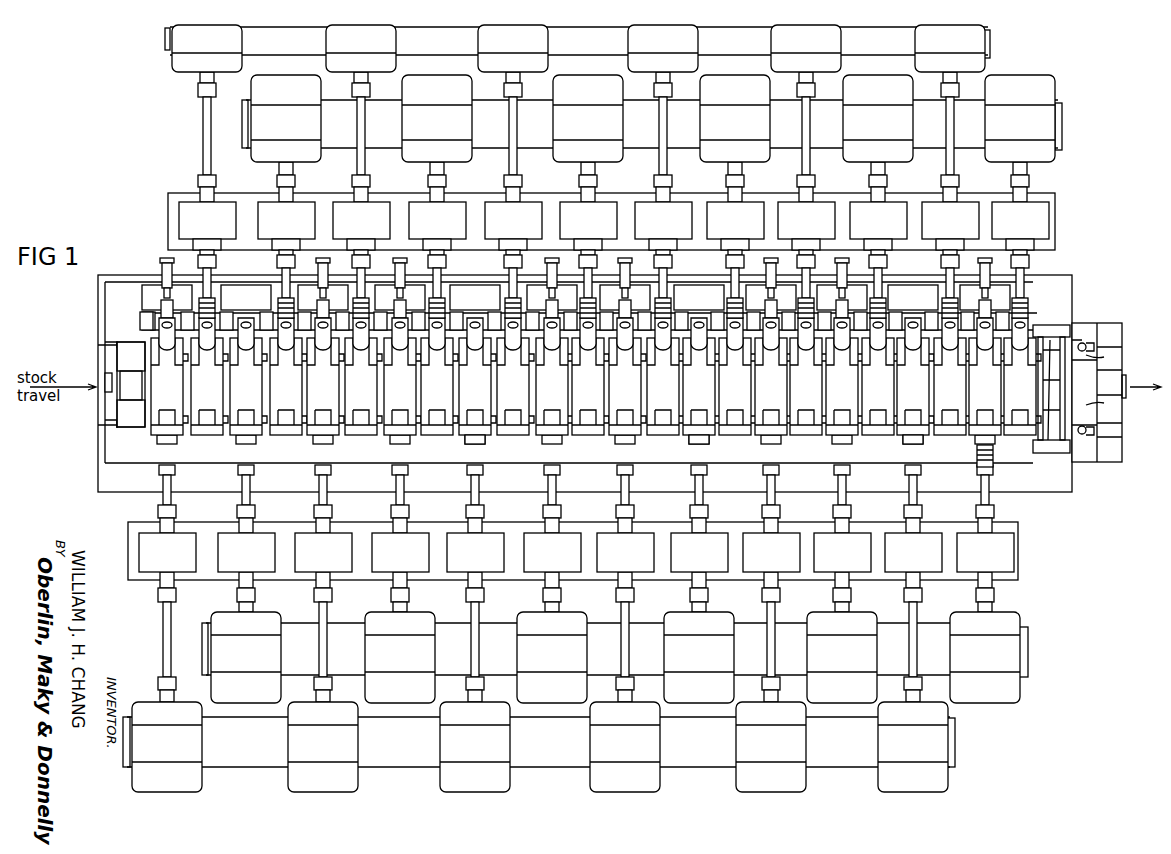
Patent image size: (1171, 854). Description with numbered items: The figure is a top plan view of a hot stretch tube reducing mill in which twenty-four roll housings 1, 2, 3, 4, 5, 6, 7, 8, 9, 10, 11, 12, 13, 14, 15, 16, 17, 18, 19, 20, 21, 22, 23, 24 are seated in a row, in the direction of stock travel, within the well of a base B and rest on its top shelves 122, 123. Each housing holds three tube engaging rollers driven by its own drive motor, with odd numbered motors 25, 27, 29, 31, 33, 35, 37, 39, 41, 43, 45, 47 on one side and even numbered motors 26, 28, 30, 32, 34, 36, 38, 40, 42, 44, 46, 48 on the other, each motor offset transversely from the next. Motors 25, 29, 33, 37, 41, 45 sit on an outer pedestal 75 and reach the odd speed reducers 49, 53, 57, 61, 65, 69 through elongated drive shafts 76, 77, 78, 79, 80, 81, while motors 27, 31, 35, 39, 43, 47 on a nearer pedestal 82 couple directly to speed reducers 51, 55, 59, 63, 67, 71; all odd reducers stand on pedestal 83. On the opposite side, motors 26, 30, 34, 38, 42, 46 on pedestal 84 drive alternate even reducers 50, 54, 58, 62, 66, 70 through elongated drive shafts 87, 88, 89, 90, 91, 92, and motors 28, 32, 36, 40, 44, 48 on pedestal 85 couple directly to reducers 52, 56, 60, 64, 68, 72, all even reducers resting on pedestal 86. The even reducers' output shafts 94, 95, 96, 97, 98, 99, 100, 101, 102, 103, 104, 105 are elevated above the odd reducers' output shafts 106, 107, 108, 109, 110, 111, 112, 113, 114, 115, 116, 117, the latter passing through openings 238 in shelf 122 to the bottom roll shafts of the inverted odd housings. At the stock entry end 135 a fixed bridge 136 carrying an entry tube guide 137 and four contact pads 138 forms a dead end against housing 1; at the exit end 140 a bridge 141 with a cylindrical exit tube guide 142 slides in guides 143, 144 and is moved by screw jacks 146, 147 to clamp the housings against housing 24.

The roll housing 1 is at (167, 351).
The roll housing 2 is at (209, 376).
The roll housing 3 is at (246, 364).
The roll housing 4 is at (288, 376).
The roll housing 5 is at (323, 351).
The roll housing 6 is at (363, 376).
The roll housing 7 is at (400, 351).
The roll housing 8 is at (439, 376).
The roll housing 9 is at (475, 364).
The roll housing 10 is at (515, 376).
The roll housing 11 is at (552, 351).
The roll housing 12 is at (590, 376).
The roll housing 13 is at (625, 351).
The roll housing 14 is at (665, 376).
The roll housing 15 is at (699, 364).
The roll housing 16 is at (737, 376).
The roll housing 17 is at (771, 351).
The roll housing 18 is at (808, 376).
The roll housing 19 is at (842, 351).
The roll housing 20 is at (880, 376).
The roll housing 21 is at (913, 364).
The roll housing 22 is at (952, 376).
The roll housing 23 is at (985, 351).
The roll housing 24 is at (1022, 376).
The drive motor 25 is at (167, 747).
The drive motor 26 is at (207, 48).
The drive motor 27 is at (246, 657).
The drive motor 28 is at (286, 138).
The drive motor 29 is at (323, 747).
The drive motor 30 is at (361, 48).
The drive motor 31 is at (400, 657).
The drive motor 32 is at (437, 138).
The drive motor 33 is at (475, 747).
The drive motor 34 is at (513, 48).
The drive motor 35 is at (552, 657).
The drive motor 36 is at (588, 138).
The drive motor 37 is at (625, 747).
The drive motor 38 is at (663, 48).
The drive motor 39 is at (699, 657).
The drive motor 40 is at (735, 138).
The drive motor 41 is at (771, 747).
The drive motor 42 is at (806, 48).
The drive motor 43 is at (842, 657).
The drive motor 44 is at (878, 138).
The drive motor 45 is at (913, 747).
The drive motor 46 is at (950, 48).
The drive motor 47 is at (985, 657).
The drive motor 48 is at (1020, 138).
The speed reducer 49 is at (167, 552).
The speed reducer 50 is at (207, 220).
The speed reducer 51 is at (246, 572).
The speed reducer 52 is at (286, 220).
The speed reducer 53 is at (323, 552).
The speed reducer 54 is at (361, 220).
The speed reducer 55 is at (400, 572).
The speed reducer 56 is at (437, 220).
The speed reducer 57 is at (475, 552).
The speed reducer 58 is at (513, 220).
The speed reducer 59 is at (552, 572).
The speed reducer 60 is at (588, 220).
The speed reducer 61 is at (625, 552).
The speed reducer 62 is at (663, 220).
The speed reducer 63 is at (699, 572).
The speed reducer 64 is at (735, 220).
The speed reducer 65 is at (771, 552).
The speed reducer 66 is at (806, 220).
The speed reducer 67 is at (842, 572).
The speed reducer 68 is at (878, 220).
The speed reducer 69 is at (913, 552).
The speed reducer 70 is at (950, 220).
The speed reducer 71 is at (985, 572).
The speed reducer 72 is at (1020, 220).
The elongated pedestal 75 is at (540, 767).
The elongated drive shaft 76 is at (163, 640).
The elongated drive shaft 77 is at (327, 644).
The elongated drive shaft 78 is at (479, 649).
The elongated drive shaft 79 is at (629, 650).
The elongated drive shaft 80 is at (774, 643).
The elongated drive shaft 81 is at (917, 644).
The elongated pedestal 82 is at (1028, 646).
The pedestal 83 is at (1021, 558).
The pedestal 84 is at (990, 42).
The pedestal 85 is at (1062, 125).
The pedestal 86 is at (1056, 220).
The elongated drive shaft 87 is at (203, 149).
The elongated drive shaft 88 is at (365, 120).
The elongated drive shaft 89 is at (518, 120).
The elongated drive shaft 90 is at (668, 120).
The elongated drive shaft 91 is at (811, 120).
The elongated drive shaft 92 is at (955, 120).
The output shaft 94 is at (209, 266).
The output shaft 95 is at (277, 268).
The output shaft 96 is at (361, 265).
The output shaft 97 is at (437, 266).
The output shaft 98 is at (509, 268).
The output shaft 99 is at (592, 265).
The output shaft 100 is at (663, 266).
The output shaft 101 is at (735, 268).
The output shaft 102 is at (810, 265).
The output shaft 103 is at (882, 265).
The output shaft 104 is at (950, 268).
The output shaft 105 is at (1024, 265).
The output shaft 106 is at (172, 496).
The output shaft 107 is at (252, 478).
The output shaft 108 is at (328, 478).
The output shaft 109 is at (404, 478).
The output shaft 110 is at (478, 478).
The output shaft 111 is at (554, 478).
The output shaft 112 is at (628, 478).
The output shaft 113 is at (702, 478).
The output shaft 114 is at (774, 478).
The output shaft 115 is at (846, 478).
The output shaft 116 is at (917, 478).
The output shaft 117 is at (989, 478).
The top shelf 122 is at (150, 463).
The top shelf 123 is at (129, 336).
The stock entry end 135 is at (98, 425).
The bridge 136 is at (98, 351).
The entry tube guide 137 is at (108, 395).
The contact pad 138 is at (133, 384).
The exit end 140 is at (1082, 314).
The bridge 141 is at (1105, 357).
The cylindrical exit tube guide 142 is at (1060, 385).
The guide 143 is at (1050, 454).
The guide 144 is at (1050, 325).
The screw jack 146 is at (1088, 340).
The screw jack 147 is at (1105, 403).
The opening 238 is at (483, 444).
The base B is at (1077, 490).